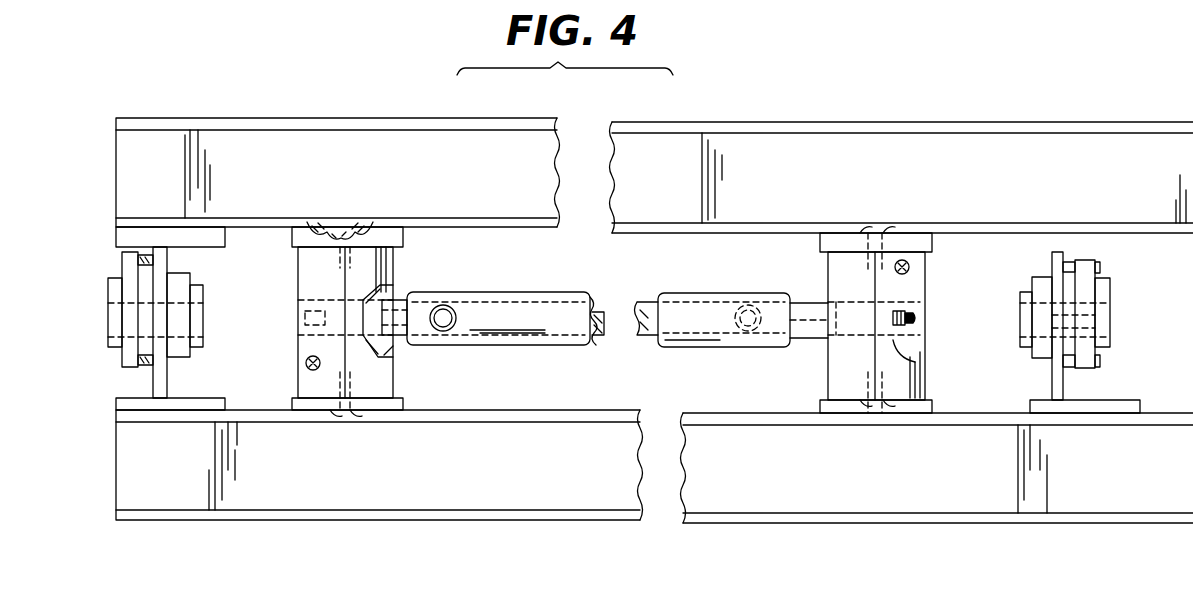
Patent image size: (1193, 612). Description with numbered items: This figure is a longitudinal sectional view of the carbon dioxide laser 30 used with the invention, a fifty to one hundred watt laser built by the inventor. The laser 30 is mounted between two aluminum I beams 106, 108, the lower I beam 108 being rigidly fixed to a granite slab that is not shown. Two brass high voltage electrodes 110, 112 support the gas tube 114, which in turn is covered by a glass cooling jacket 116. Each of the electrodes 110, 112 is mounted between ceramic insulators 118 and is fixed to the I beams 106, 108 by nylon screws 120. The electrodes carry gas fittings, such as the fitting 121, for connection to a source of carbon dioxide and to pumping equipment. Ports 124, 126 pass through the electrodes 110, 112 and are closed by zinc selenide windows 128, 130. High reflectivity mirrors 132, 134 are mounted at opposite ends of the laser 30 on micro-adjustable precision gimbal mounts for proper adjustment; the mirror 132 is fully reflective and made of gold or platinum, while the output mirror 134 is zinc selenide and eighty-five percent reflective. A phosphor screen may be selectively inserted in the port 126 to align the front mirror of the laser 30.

The laser 30 is at (240, 100).
The I beam 106 is at (935, 122).
The I beam 108 is at (822, 518).
The high voltage electrode 110 is at (385, 292).
The high voltage electrode 112 is at (925, 269).
The gas tube 114 is at (600, 302).
The glass cooling jacket 116 is at (710, 297).
The ceramic insulator 118 is at (308, 235).
The nylon screw 120 is at (335, 225).
The gas fitting 121 is at (917, 316).
The port 124 is at (328, 300).
The port 126 is at (925, 363).
The zinc selenide window 128 is at (298, 304).
The zinc selenide window 130 is at (925, 326).
The high reflectivity mirror 132 is at (120, 268).
The high reflectivity mirror 134 is at (1110, 285).